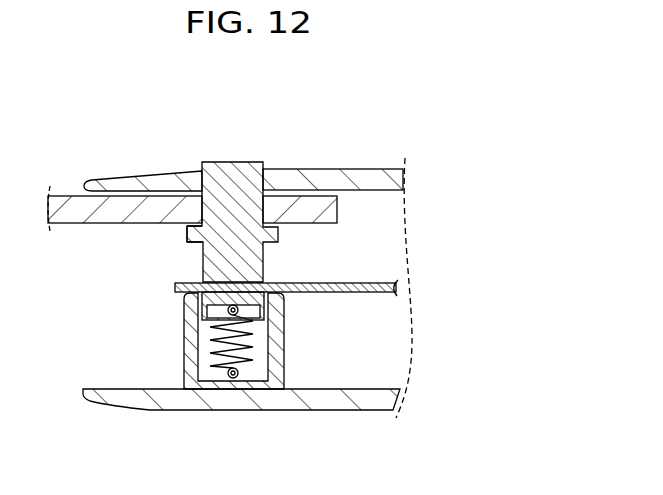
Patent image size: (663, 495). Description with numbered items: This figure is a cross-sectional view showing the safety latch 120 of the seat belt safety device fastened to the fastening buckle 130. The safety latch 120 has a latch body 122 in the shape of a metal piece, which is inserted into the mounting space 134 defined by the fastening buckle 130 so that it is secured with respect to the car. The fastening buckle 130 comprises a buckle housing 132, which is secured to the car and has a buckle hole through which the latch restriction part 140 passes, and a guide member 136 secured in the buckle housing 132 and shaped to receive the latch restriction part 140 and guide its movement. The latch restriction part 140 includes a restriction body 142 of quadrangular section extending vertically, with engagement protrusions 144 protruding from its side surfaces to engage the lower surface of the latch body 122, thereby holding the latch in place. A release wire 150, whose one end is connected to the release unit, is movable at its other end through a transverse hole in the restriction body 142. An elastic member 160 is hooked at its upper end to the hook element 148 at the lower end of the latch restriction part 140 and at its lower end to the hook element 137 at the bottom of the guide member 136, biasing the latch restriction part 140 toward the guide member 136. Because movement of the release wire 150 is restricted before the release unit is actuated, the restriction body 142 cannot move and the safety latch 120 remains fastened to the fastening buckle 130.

The safety latch 120 is at (249, 218).
The latch body 122 is at (318, 215).
The fastening buckle 130 is at (243, 137).
The buckle housing 132 is at (372, 180).
The mounting space 134 is at (355, 358).
The guide member 136 is at (193, 370).
The hook element 137 is at (240, 376).
The latch restriction part 140 is at (193, 198).
The restriction body 142 is at (238, 167).
The engagement protrusions 144 is at (196, 256).
The hook element 148 is at (240, 311).
The release wire 150 is at (365, 284).
The elastic member 160 is at (213, 344).